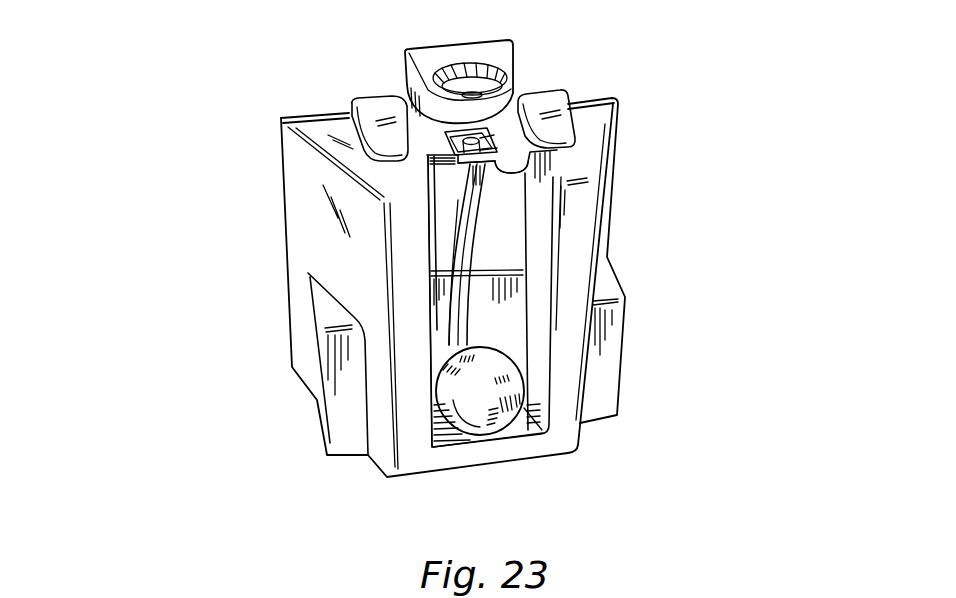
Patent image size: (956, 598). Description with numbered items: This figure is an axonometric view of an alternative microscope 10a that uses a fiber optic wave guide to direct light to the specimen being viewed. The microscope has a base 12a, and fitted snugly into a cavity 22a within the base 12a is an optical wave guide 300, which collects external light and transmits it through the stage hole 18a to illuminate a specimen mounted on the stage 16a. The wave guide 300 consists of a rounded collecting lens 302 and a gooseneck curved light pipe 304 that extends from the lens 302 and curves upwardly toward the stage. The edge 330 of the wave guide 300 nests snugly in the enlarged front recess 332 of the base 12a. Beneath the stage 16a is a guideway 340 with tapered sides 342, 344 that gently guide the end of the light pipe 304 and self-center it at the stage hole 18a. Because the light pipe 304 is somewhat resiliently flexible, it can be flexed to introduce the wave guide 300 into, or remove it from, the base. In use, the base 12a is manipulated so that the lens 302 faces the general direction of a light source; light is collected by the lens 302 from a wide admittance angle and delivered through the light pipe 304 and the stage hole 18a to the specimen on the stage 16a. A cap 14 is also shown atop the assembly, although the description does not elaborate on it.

The microscope 10a is at (262, 69).
The base 12a is at (617, 173).
The cap 14 is at (513, 42).
The stage 16a is at (598, 123).
The stage hole 18a is at (482, 140).
The cavity 22a is at (450, 210).
The optical wave guide 300 is at (466, 304).
The collecting lens 302 is at (485, 435).
The light pipe 304 is at (485, 215).
The edge 330 is at (461, 438).
The enlarged front recess 332 is at (517, 435).
The guideway 340 is at (464, 171).
The tapered side 342 is at (460, 158).
The tapered side 344 is at (505, 176).